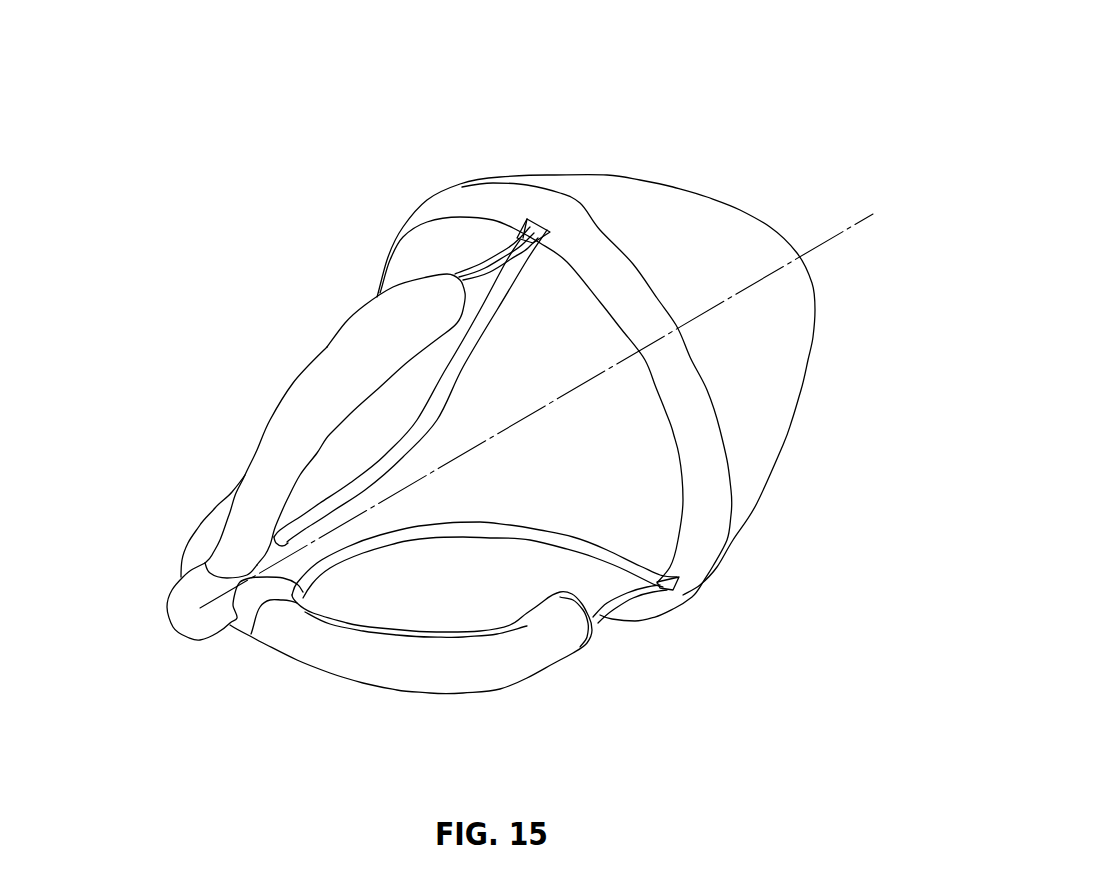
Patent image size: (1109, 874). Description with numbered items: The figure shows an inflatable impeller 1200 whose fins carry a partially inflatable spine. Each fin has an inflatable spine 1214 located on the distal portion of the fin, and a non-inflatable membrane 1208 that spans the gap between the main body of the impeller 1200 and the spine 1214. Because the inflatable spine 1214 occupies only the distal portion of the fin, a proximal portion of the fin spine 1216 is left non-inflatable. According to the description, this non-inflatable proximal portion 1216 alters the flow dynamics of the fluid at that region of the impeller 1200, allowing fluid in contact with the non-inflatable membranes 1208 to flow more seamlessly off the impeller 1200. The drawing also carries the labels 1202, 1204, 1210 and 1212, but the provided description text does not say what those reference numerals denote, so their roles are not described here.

The impeller 1200 is at (792, 131).
The shell 1202 is at (740, 365).
The hoop 1204 is at (462, 185).
The non-inflatable membrane 1208 is at (443, 580).
The hub 1210 is at (200, 620).
The central axis 1212 is at (828, 243).
The inflatable spine 1214 is at (327, 370).
The non-inflatable proximal portion of fin spine 1216 is at (595, 582).